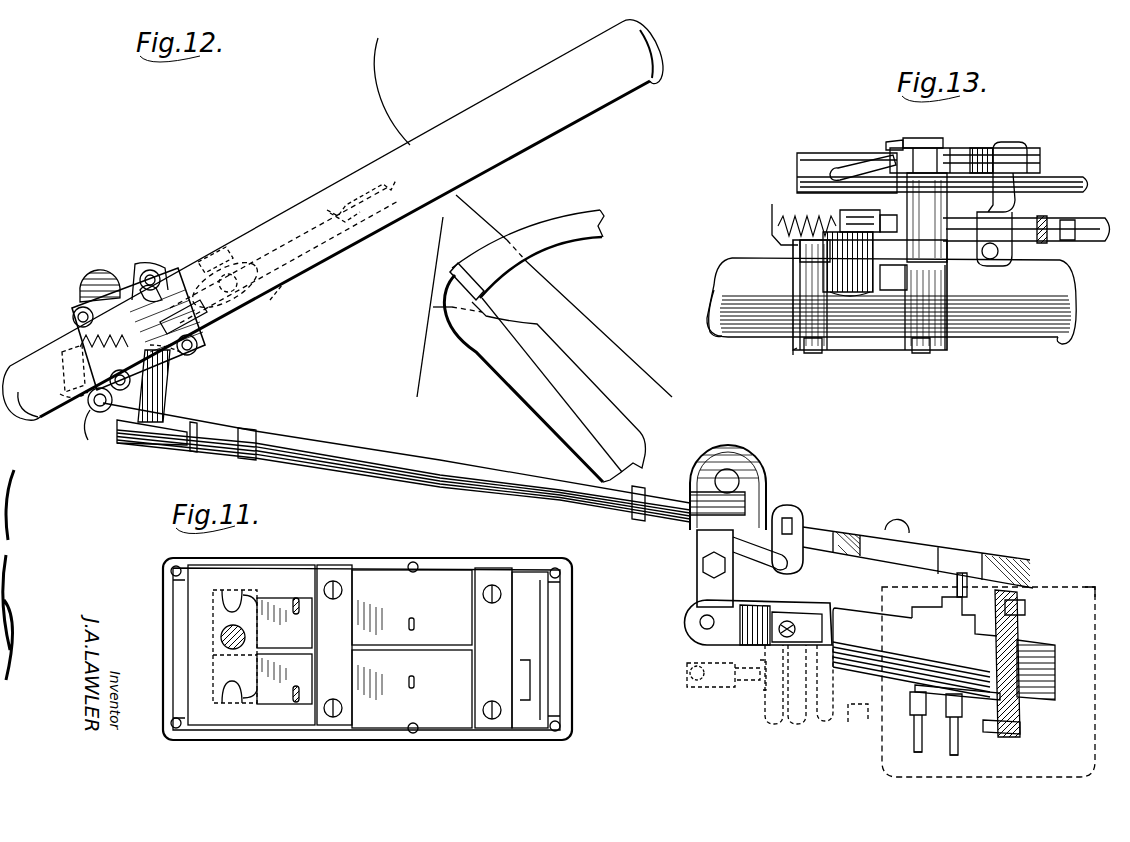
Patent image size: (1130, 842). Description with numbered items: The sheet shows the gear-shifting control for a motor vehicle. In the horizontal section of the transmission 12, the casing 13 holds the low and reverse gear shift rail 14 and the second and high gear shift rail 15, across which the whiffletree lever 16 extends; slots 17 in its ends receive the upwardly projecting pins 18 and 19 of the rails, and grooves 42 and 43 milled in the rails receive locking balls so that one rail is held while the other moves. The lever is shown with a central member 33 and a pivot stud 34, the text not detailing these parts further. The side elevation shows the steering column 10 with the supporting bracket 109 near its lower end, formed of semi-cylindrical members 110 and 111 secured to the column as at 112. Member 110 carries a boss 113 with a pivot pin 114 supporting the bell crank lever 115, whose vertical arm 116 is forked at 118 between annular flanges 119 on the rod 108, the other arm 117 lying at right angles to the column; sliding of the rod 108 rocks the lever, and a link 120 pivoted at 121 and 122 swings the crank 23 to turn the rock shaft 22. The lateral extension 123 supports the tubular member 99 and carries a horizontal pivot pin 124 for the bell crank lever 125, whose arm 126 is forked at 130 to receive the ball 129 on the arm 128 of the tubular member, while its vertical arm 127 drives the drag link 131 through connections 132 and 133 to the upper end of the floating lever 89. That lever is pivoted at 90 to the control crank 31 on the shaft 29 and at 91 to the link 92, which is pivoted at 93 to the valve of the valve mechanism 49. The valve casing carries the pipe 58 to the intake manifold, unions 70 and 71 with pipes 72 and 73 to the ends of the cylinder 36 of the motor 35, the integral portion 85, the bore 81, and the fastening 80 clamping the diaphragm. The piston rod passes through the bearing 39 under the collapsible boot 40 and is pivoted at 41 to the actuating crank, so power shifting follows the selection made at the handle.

In FIG. 12, the steering column 10 is at (518, 93).
In FIG. 11, the transmission 12 is at (360, 560).
In FIG. 11, the casing 13 is at (306, 562).
In FIG. 11, the low and reverse gear shift rail 14 is at (395, 610).
In FIG. 11, the second and high gear shift rail 15 is at (392, 702).
In FIG. 11, the whiffletree lever 16 is at (265, 650).
In FIG. 11, the slots 17 is at (256, 598).
In FIG. 11, the pin 18 is at (222, 690).
In FIG. 11, the pin 19 is at (232, 598).
In FIG. 12, the rock shaft 22 is at (792, 520).
In FIG. 12, the crank 23 is at (803, 525).
In FIG. 12, the shaft 29 is at (729, 480).
In FIG. 12, the control crank 31 is at (736, 493).
In FIG. 11, the slide member 33 is at (215, 648).
In FIG. 11, the pivot stud 34 is at (221, 634).
In FIG. 12, the motor 35 is at (1092, 588).
In FIG. 12, the cylinder 36 is at (882, 759).
In FIG. 12, the bearing 39 is at (866, 723).
In FIG. 12, the collapsible boot 40 is at (821, 723).
In FIG. 12, the pivotal connection 41 is at (686, 676).
In FIG. 11, the groove 42 is at (296, 598).
In FIG. 11, the groove 43 is at (296, 702).
In FIG. 12, the valve mechanism 49 is at (860, 601).
In FIG. 12, the pipe 58 is at (967, 603).
In FIG. 12, the union 70 is at (949, 710).
In FIG. 12, the union 71 is at (912, 705).
In FIG. 12, the pipe 72 is at (957, 750).
In FIG. 12, the pipe 73 is at (912, 750).
In FIG. 12, the securing means 80 is at (1024, 609).
In FIG. 12, the cylindrical bore 81 is at (1046, 660).
In FIG. 12, the integral portion 85 is at (914, 688).
In FIG. 12, the floating lever 89 is at (733, 584).
In FIG. 12, the pivotal connection 90 is at (704, 566).
In FIG. 12, the pivotal connection 91 is at (700, 612).
In FIG. 12, the link 92 is at (745, 615).
In FIG. 12, the pivotal connection 93 is at (790, 622).
In FIG. 12, the tubular member 99 is at (303, 219).
In FIG. 13, the tubular member 99 is at (1040, 243).
In FIG. 12, the rod 108 is at (388, 186).
In FIG. 13, the rod 108 is at (1062, 220).
In FIG. 12, the supporting bracket 109 is at (132, 380).
In FIG. 13, the supporting bracket 109 is at (786, 354).
In FIG. 13, the semi-cylindrical member 110 is at (948, 288).
In FIG. 12, the semi-cylindrical member 111 is at (100, 312).
In FIG. 13, the semi-cylindrical member 111 is at (943, 345).
In FIG. 12, the securing means 112 is at (197, 348).
In FIG. 13, the securing means 112 is at (815, 353).
In FIG. 12, the boss 113 is at (118, 270).
In FIG. 13, the boss 113 is at (905, 272).
In FIG. 12, the pivot pin 114 is at (98, 270).
In FIG. 13, the pivot pin 114 is at (844, 270).
In FIG. 12, the bell crank lever 115 is at (66, 370).
In FIG. 13, the bell crank lever 115 is at (818, 248).
In FIG. 12, the arm 116 is at (90, 408).
In FIG. 12, the arm 117 is at (146, 286).
In FIG. 13, the arm 117 is at (874, 252).
In FIG. 12, the forked end 118 is at (185, 356).
In FIG. 13, the forked end 118 is at (862, 214).
In FIG. 12, the annular flanges 119 is at (168, 280).
In FIG. 13, the annular flanges 119 is at (774, 208).
In FIG. 12, the link 120 is at (217, 418).
In FIG. 13, the link 120 is at (1072, 242).
In FIG. 12, the pivotal connection 121 is at (100, 412).
In FIG. 12, the pivotal connection 122 is at (793, 565).
In FIG. 13, the lateral extension 123 is at (925, 201).
In FIG. 12, the pivot pin 124 is at (205, 333).
In FIG. 13, the pivot pin 124 is at (933, 147).
In FIG. 12, the bell crank lever 125 is at (167, 402).
In FIG. 13, the bell crank lever 125 is at (895, 145).
In FIG. 12, the arm 126 is at (218, 248).
In FIG. 13, the arm 126 is at (962, 147).
In FIG. 12, the arm 127 is at (143, 425).
In FIG. 13, the arm 127 is at (850, 165).
In FIG. 12, the arm 128 is at (272, 282).
In FIG. 13, the arm 128 is at (1014, 204).
In FIG. 13, the ball 129 is at (1005, 148).
In FIG. 12, the fork 130 is at (284, 284).
In FIG. 13, the fork 130 is at (1032, 150).
In FIG. 12, the drag link 131 is at (340, 455).
In FIG. 13, the drag link 131 is at (1072, 176).
In FIG. 12, the connection 132 is at (183, 450).
In FIG. 13, the connection 132 is at (806, 162).
In FIG. 12, the connection 133 is at (694, 494).